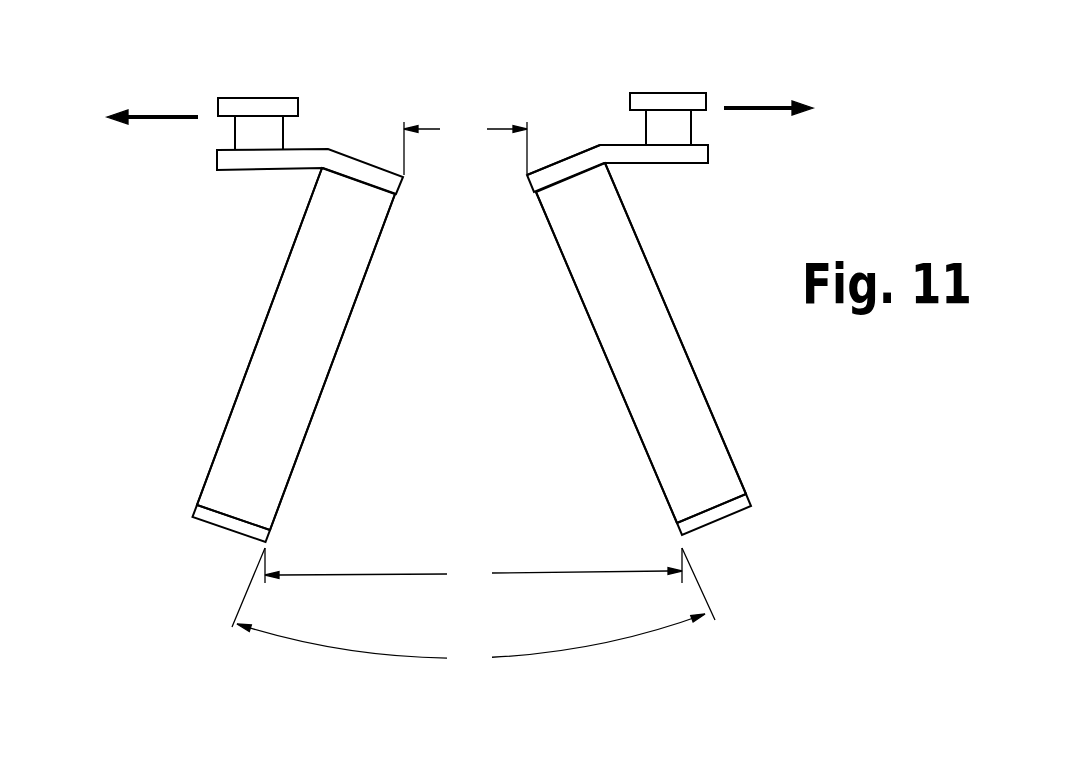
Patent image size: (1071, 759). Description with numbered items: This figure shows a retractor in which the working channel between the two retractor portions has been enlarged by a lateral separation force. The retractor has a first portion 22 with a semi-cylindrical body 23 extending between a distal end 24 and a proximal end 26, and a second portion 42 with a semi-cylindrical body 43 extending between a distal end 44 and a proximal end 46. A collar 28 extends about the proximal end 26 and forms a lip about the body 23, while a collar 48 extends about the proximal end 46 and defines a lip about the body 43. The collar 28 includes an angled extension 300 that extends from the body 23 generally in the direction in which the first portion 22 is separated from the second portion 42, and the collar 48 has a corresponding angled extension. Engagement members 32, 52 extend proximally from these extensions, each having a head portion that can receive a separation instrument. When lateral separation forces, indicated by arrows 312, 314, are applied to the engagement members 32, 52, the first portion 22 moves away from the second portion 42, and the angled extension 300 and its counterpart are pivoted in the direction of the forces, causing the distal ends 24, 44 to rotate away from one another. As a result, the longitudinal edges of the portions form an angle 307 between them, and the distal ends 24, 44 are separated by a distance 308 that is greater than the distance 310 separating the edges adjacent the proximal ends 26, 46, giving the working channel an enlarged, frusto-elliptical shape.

The first portion 22 is at (720, 399).
The semi-cylindrical body 23 is at (667, 380).
The distal end 24 is at (735, 513).
The proximal end 26 is at (618, 193).
The collar 28 is at (580, 153).
The engagement member 32 is at (668, 92).
The second portion 42 is at (220, 405).
The semi-cylindrical body 43 is at (295, 387).
The distal end 44 is at (207, 523).
The proximal end 46 is at (313, 198).
The collar 48 is at (350, 154).
The second engagement member 52 is at (252, 98).
The extension 300 is at (698, 164).
The angle 307 is at (473, 612).
The distance 308 is at (473, 568).
The distance 310 is at (465, 144).
The arrow 312 is at (770, 105).
The arrow 314 is at (155, 110).